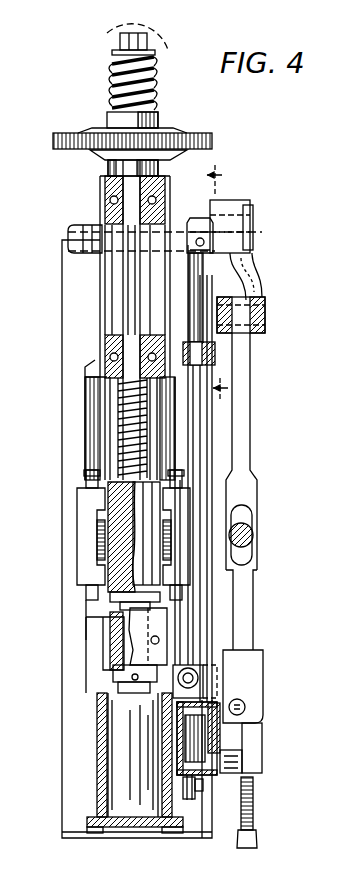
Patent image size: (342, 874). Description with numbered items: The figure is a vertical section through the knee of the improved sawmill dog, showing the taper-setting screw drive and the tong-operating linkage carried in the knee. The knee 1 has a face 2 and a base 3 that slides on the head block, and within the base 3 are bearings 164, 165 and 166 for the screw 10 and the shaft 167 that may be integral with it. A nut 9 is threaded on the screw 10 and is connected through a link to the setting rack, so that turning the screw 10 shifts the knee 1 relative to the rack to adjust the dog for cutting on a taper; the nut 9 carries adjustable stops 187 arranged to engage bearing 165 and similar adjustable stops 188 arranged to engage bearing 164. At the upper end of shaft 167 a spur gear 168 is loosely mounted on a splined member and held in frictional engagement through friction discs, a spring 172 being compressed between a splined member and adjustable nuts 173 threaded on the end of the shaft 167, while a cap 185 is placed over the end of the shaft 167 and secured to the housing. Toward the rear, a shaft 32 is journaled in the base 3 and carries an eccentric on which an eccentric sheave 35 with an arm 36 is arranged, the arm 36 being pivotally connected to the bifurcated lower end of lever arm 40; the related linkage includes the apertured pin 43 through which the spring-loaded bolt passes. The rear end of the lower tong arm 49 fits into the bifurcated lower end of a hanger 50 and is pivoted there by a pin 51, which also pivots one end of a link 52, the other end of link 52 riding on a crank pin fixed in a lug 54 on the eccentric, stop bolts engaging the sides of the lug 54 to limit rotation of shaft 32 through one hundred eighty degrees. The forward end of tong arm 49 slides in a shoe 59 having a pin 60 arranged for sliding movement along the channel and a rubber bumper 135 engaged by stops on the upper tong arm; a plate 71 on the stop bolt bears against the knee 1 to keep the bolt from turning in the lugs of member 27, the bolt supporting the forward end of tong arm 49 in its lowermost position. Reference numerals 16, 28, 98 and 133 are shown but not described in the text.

The knee 1 is at (100, 755).
The face 2 is at (158, 833).
The base 3 is at (168, 204).
The nut 9 is at (158, 540).
The screw 10 is at (118, 426).
The axis 16 is at (213, 284).
The member 27 is at (210, 777).
The block 28 is at (197, 791).
The shaft 32 is at (76, 231).
The eccentric sheave 35 is at (203, 218).
The arm 36 is at (195, 305).
The arm 40 is at (218, 363).
The apertured pin 43 is at (216, 742).
The lower tong arm 49 is at (250, 448).
The hanger 50 is at (266, 299).
The pin 51 is at (266, 315).
The link 52 is at (254, 267).
The lug 54 is at (220, 204).
The shoe 59 is at (227, 680).
The pin 60 is at (210, 742).
The plate 71 is at (203, 665).
The pivot pin 98 is at (253, 532).
The pin 133 is at (256, 815).
The rubber bumper 135 is at (246, 706).
The bearing 164 is at (108, 631).
The bearing 165 is at (105, 341).
The bearing 166 is at (105, 191).
The shaft 167 is at (124, 299).
The spur gear 168 is at (65, 132).
The spring 172 is at (156, 87).
The adjustable nuts 173 is at (106, 50).
The cap 185 is at (110, 29).
The adjustable stops 187 is at (86, 478).
The adjustable stops 188 is at (92, 550).